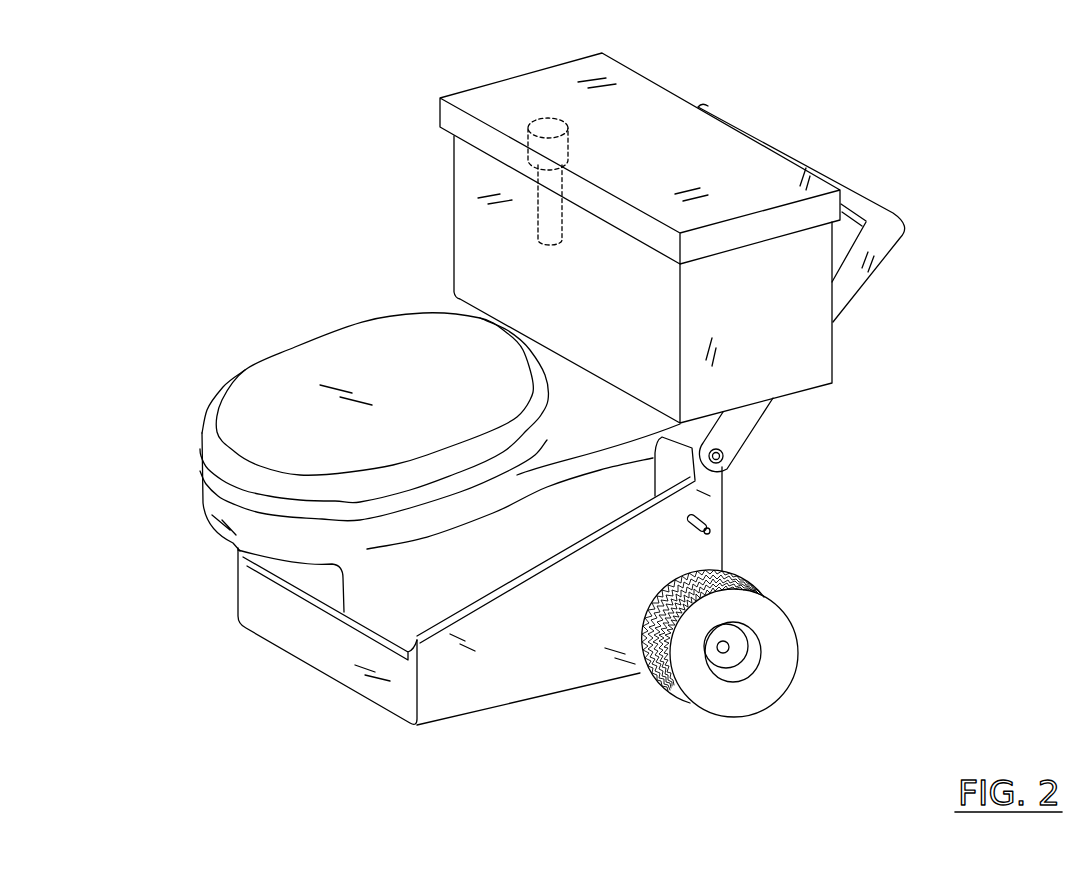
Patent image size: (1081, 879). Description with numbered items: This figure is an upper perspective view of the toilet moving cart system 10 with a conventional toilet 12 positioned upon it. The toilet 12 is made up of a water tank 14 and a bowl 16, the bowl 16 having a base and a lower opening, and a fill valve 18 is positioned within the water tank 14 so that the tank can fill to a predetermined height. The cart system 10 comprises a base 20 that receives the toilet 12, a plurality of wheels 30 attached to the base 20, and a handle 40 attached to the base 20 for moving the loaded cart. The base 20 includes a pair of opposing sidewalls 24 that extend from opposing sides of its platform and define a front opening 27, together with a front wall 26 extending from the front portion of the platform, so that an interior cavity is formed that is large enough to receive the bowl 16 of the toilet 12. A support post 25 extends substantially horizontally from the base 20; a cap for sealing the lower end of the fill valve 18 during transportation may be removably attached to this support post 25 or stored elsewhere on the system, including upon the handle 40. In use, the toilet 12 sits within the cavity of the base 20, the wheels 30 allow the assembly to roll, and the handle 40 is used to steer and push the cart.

The toilet moving cart system 10 is at (960, 88).
The toilet 12 is at (462, 88).
The water tank 14 is at (812, 368).
The bowl 16 is at (362, 612).
The fill valve 18 is at (552, 228).
The base 20 is at (593, 687).
The sidewalls 24 is at (472, 703).
The support post 25 is at (708, 531).
The front wall 26 is at (340, 668).
The front opening 27 is at (287, 588).
The wheels 30 is at (763, 693).
The handle 40 is at (883, 247).